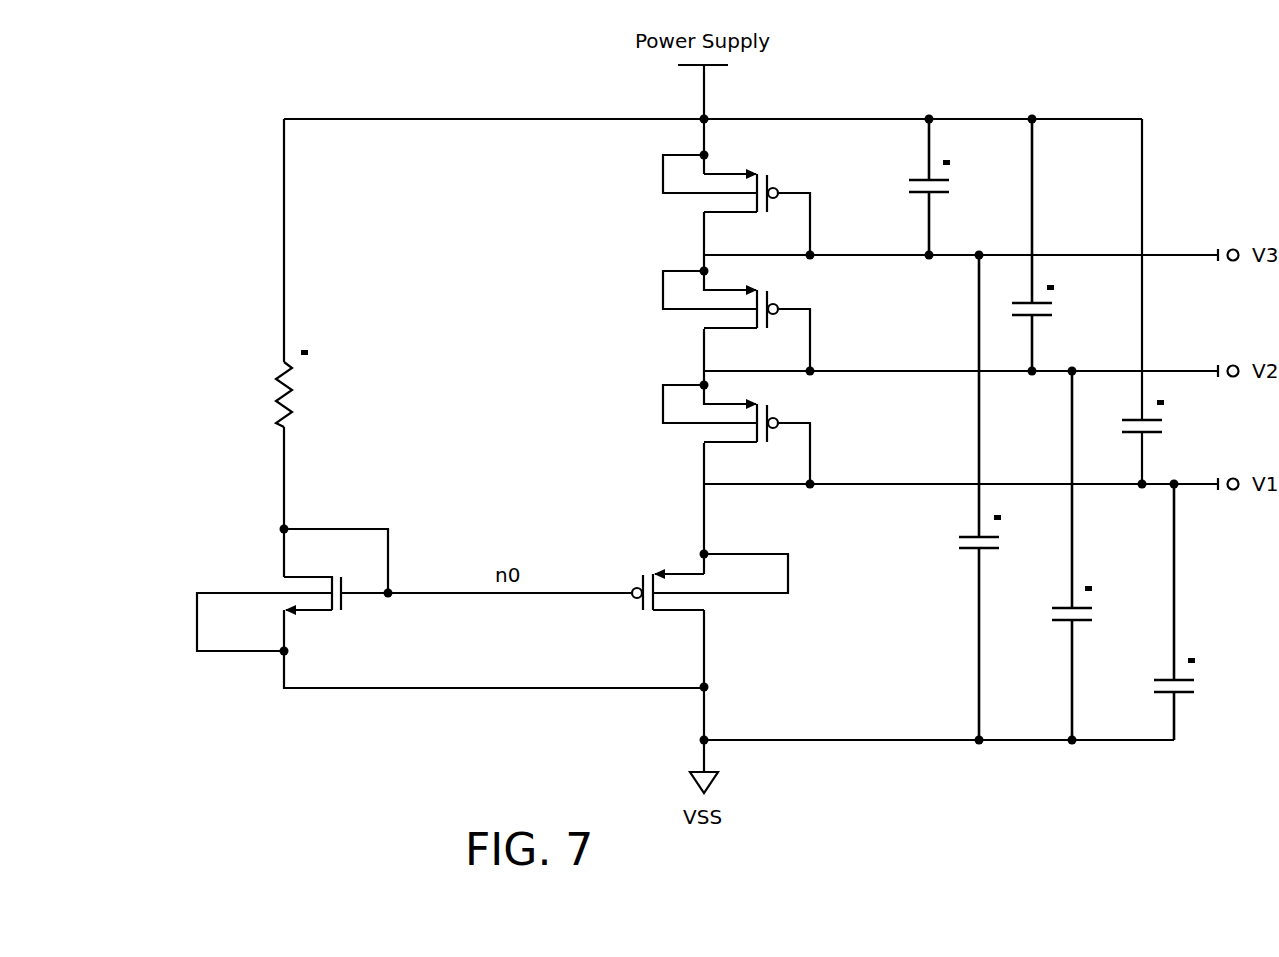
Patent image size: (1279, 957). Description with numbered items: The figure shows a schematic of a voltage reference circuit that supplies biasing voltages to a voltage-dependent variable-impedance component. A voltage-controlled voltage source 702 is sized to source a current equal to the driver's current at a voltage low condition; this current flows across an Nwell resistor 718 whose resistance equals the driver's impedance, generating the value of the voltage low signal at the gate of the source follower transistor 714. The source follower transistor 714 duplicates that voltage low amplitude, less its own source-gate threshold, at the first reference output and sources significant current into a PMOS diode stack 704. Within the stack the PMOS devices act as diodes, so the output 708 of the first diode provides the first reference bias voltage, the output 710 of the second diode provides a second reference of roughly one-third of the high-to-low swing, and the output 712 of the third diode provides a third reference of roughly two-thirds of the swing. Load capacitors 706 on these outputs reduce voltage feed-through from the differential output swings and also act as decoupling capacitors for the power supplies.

The voltage-controlled voltage source 702 is at (252, 566).
The PMOS diode stack 704 is at (688, 339).
The load capacitors 706 is at (963, 318).
The output of diode M3 708 is at (777, 268).
The output of diode M2 710 is at (777, 383).
The output of diode M1 712 is at (777, 498).
The source follower transistor 714 is at (632, 623).
The Nwell resistor 718 is at (250, 365).